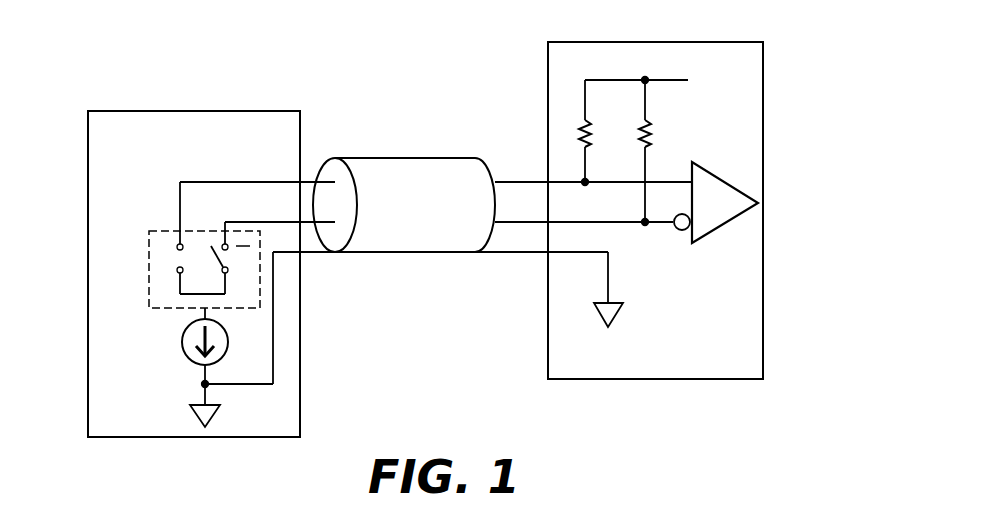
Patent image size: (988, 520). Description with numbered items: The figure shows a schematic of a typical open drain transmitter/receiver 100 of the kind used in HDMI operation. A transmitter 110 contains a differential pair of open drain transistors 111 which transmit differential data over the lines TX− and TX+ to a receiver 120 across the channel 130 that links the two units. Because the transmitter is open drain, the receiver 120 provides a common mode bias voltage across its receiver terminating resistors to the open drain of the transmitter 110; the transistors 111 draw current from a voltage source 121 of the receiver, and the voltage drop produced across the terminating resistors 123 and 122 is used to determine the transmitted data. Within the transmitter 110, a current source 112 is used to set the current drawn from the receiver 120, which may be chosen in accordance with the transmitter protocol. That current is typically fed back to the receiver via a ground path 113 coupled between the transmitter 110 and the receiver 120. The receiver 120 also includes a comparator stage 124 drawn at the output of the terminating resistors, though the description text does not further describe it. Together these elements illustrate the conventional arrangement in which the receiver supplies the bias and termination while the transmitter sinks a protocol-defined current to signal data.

The open drain transmitter/receiver 100 is at (339, 84).
The transmitter 110 is at (196, 109).
The differential pair of open drain transistors 111 is at (148, 233).
The current source 112 is at (188, 360).
The ground path 113 is at (273, 282).
The receiver 120 is at (665, 384).
The voltage source 121 is at (683, 56).
The terminating resistor 122 is at (645, 120).
The terminating resistor 123 is at (585, 120).
The comparator 124 is at (735, 218).
The channel 130 is at (398, 158).